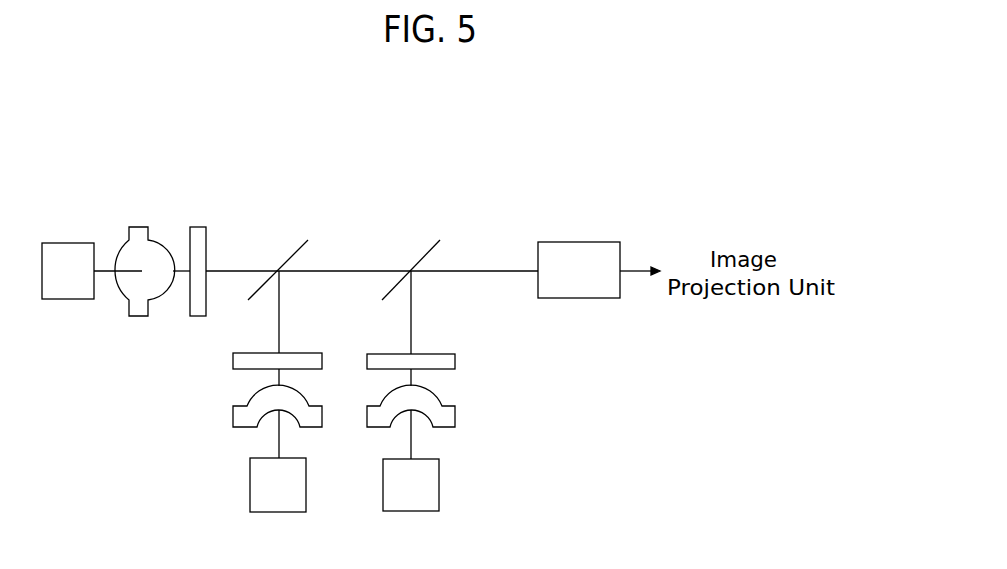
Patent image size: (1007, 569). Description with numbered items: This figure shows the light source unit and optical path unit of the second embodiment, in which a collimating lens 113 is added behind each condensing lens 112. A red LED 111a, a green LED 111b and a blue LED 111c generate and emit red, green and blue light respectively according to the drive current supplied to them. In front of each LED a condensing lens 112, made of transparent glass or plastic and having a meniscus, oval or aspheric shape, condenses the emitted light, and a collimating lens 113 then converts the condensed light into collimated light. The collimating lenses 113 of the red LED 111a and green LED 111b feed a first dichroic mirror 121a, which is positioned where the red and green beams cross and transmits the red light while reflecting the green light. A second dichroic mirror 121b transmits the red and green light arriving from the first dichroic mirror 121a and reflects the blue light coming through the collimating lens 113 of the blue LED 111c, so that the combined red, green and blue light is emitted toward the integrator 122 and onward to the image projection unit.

The red LED 111a is at (63, 247).
The green LED 111b is at (251, 485).
The blue LED 111c is at (440, 486).
The condensing lens 112 is at (138, 225).
The collimating lens 113 is at (197, 225).
The first dichroic mirror 121a is at (292, 253).
The second dichroic mirror 121b is at (424, 253).
The integrator 122 is at (580, 247).